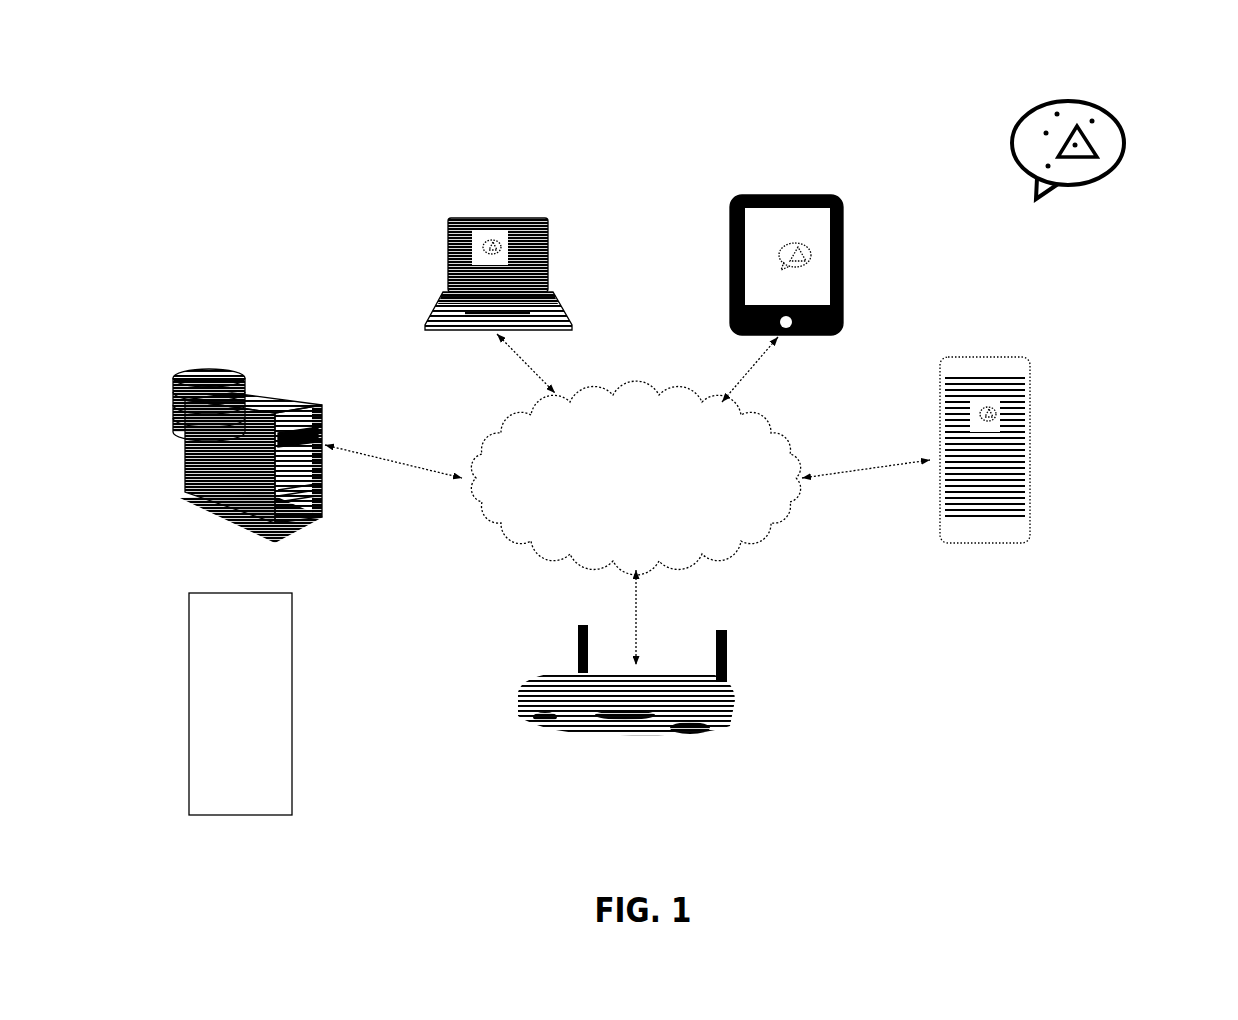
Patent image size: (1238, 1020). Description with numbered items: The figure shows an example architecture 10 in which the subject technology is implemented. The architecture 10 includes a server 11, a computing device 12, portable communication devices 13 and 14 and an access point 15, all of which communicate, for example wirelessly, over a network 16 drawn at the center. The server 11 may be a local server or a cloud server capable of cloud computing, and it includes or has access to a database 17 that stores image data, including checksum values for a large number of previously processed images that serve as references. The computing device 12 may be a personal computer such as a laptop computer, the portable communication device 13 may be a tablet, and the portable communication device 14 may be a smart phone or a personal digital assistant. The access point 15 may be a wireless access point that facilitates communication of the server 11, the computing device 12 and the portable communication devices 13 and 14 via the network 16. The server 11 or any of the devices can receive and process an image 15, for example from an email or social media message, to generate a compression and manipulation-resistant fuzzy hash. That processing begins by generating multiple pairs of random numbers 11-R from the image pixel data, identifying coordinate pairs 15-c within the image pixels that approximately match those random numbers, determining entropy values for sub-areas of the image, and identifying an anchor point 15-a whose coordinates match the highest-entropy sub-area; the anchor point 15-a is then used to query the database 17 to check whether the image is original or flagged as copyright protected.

The architecture 10 is at (208, 186).
The server 11 is at (305, 408).
The pairs of random numbers 11-R is at (296, 592).
The computing device 12 is at (505, 218).
The portable communication device 13 is at (793, 195).
The portable communication device 14 is at (1015, 357).
The access point / image 15 is at (511, 238).
The anchor point 15-a is at (1077, 144).
The coordinate pairs 15-c is at (1048, 166).
The network 16 is at (648, 502).
The database 17 is at (208, 368).